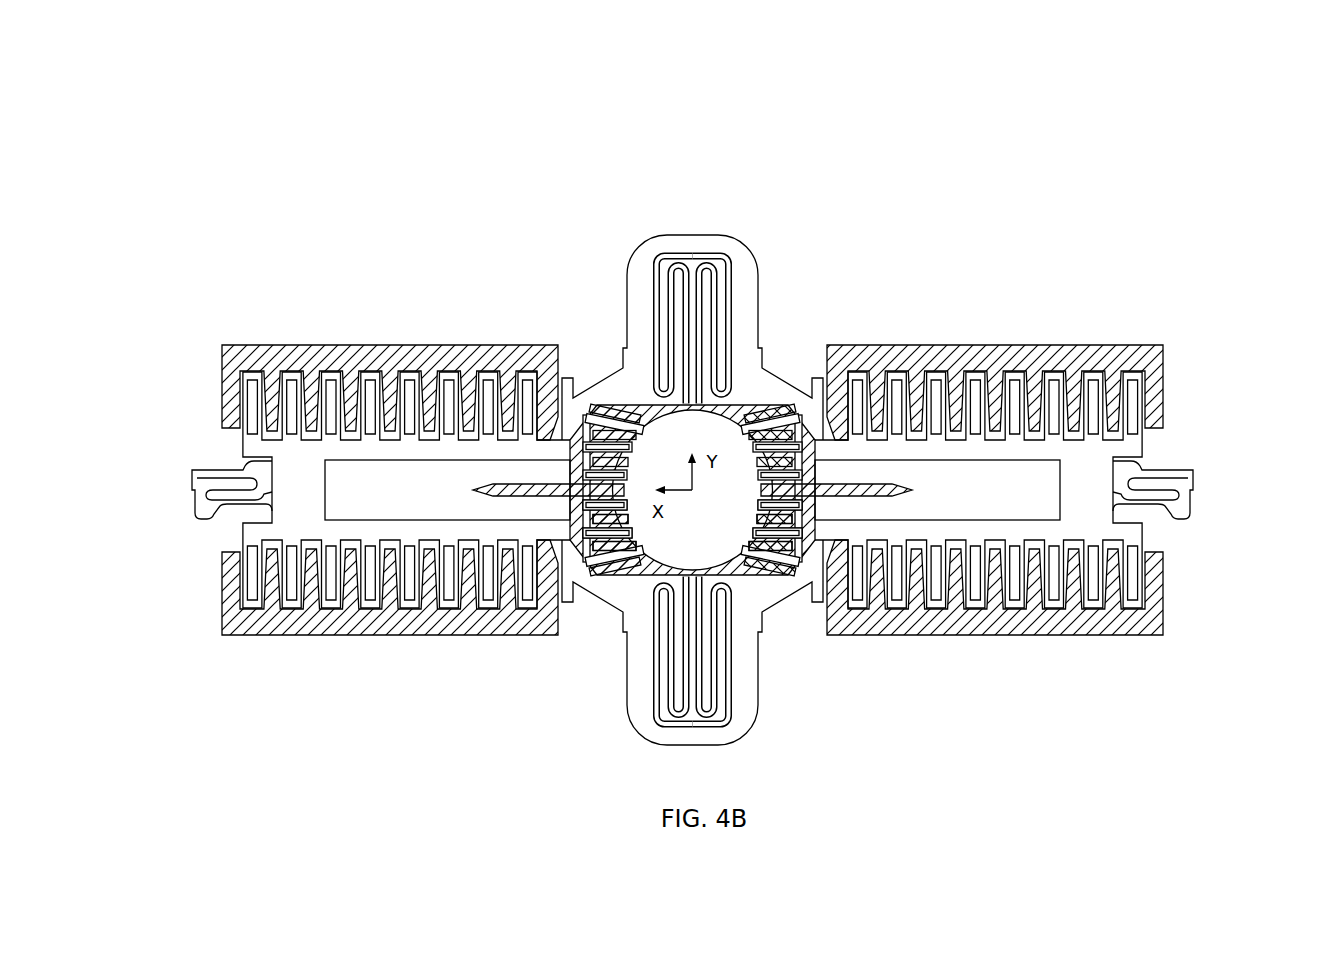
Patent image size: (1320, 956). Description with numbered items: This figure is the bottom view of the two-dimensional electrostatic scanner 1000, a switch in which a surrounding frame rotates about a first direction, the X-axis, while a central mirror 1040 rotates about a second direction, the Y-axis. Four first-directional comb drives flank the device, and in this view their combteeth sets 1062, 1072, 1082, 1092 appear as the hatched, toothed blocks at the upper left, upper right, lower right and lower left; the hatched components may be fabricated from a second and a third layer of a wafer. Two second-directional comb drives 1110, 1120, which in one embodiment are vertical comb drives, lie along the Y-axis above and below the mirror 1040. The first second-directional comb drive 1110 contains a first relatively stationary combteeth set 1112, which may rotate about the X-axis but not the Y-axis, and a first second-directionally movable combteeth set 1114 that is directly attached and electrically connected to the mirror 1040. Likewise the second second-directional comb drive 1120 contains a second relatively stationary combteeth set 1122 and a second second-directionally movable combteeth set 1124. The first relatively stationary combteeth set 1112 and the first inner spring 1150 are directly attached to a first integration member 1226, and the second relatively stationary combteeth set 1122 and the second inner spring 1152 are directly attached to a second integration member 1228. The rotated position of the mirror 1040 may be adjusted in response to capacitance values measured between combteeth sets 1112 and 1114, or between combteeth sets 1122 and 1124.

The two-dimensional electrostatic scanner 1000 is at (316, 144).
The mirror 1040 is at (667, 453).
The first fixed combteeth set 1062 is at (210, 393).
The fixed combteeth set of comb drive 1070 1072 is at (1175, 393).
The fixed combteeth set of comb drive 1080 1082 is at (1175, 593).
The fixed combteeth set of comb drive 1090 1092 is at (210, 593).
The first second-directional comb drive 1110 is at (643, 584).
The second second-directional comb drive 1120 is at (742, 584).
The first relatively stationary combteeth set 1112 is at (592, 513).
The first second-directionally movable combteeth set 1114 is at (615, 552).
The second relatively stationary combteeth set 1122 is at (797, 515).
The second second-directionally movable combteeth set 1124 is at (767, 552).
The first inner spring 1150 is at (522, 488).
The second inner spring 1152 is at (866, 488).
The first integration member 1226 is at (603, 417).
The second integration member 1228 is at (783, 417).